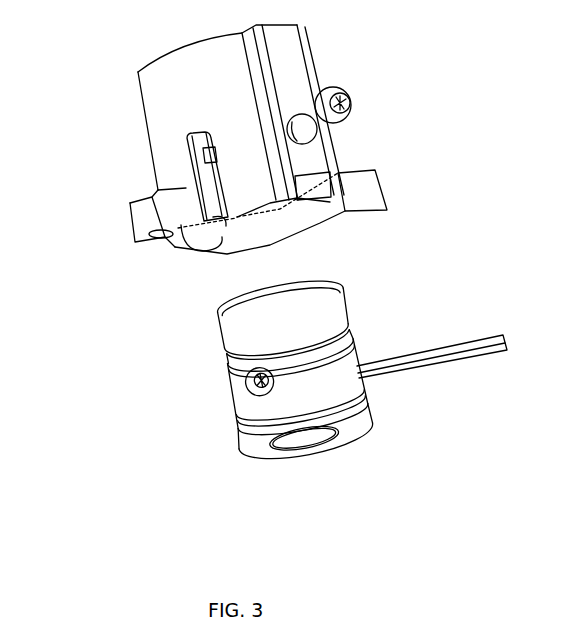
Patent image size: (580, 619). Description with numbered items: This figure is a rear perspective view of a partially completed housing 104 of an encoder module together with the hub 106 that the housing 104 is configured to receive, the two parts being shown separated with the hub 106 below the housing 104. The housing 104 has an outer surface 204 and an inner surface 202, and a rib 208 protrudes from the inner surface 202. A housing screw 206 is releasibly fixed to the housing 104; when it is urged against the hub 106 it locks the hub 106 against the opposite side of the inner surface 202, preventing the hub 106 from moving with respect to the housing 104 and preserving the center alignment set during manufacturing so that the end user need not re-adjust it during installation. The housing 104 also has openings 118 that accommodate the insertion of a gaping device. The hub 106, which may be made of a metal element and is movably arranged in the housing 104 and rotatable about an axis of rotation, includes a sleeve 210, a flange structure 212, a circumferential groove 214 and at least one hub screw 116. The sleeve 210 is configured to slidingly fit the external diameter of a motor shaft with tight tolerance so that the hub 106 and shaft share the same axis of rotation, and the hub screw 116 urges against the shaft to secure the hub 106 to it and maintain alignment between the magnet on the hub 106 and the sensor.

The housing 104 is at (118, 126).
The outer surface 204 is at (167, 101).
The inner surface 202 is at (277, 223).
The housing screw 206 is at (347, 115).
The opening 118 is at (198, 190).
The rib 208 is at (212, 244).
The hub 106 is at (385, 407).
The flange structure 212 is at (300, 297).
The circumferential groove 214 is at (214, 366).
The hub screw 116 is at (256, 388).
The sleeve 210 is at (300, 443).